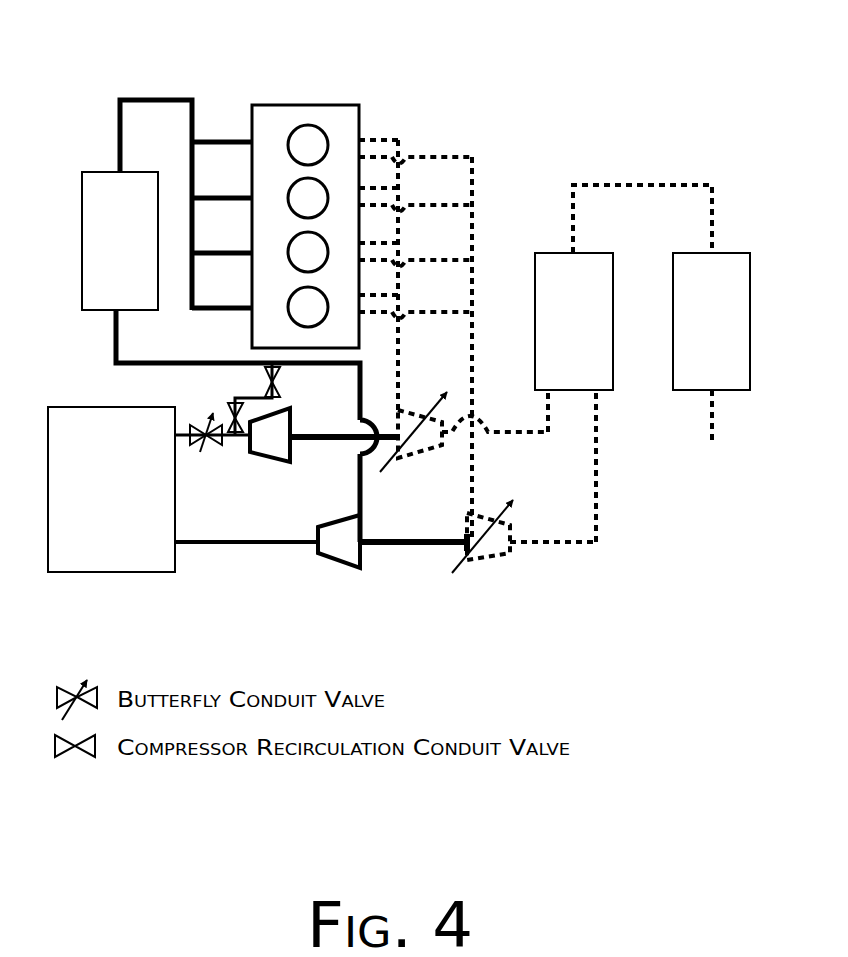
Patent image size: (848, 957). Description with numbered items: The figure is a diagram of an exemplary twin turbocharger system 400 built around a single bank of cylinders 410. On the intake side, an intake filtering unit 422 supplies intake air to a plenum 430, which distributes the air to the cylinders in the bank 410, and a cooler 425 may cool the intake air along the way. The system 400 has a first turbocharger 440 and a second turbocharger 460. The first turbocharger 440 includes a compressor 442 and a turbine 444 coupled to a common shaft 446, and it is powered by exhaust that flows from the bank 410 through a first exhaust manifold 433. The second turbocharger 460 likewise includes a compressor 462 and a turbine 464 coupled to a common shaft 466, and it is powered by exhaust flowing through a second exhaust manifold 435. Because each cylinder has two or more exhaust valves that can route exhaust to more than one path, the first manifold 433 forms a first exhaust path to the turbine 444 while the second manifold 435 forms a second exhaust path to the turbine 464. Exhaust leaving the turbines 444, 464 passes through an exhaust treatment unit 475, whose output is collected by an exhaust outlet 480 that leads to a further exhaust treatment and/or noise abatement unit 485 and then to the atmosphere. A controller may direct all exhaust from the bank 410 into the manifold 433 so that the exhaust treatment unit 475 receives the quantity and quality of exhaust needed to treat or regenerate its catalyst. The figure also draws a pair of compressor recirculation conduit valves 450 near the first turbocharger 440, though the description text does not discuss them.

The twin turbocharger system 400 is at (380, 26).
The bank of cylinders 410 is at (318, 105).
The intake filtering unit 422 is at (137, 570).
The cooler 425 is at (229, 357).
The plenum 430 is at (177, 100).
The first exhaust manifold 433 is at (398, 140).
The second exhaust manifold 435 is at (472, 185).
The first turbocharger 440 is at (333, 448).
The compressor 442 is at (262, 452).
The turbine 444 is at (430, 452).
The common shaft 446 is at (337, 453).
The compressor recirculation conduit valves 450 is at (207, 387).
The second turbocharger 460 is at (457, 573).
The compressor 462 is at (360, 522).
The turbine 464 is at (488, 560).
The common shaft 466 is at (377, 547).
The exhaust treatment unit 475 is at (574, 397).
The exhaust outlet 480 is at (618, 185).
The exhaust treatment unit and/or noise abatement unit 485 is at (711, 346).